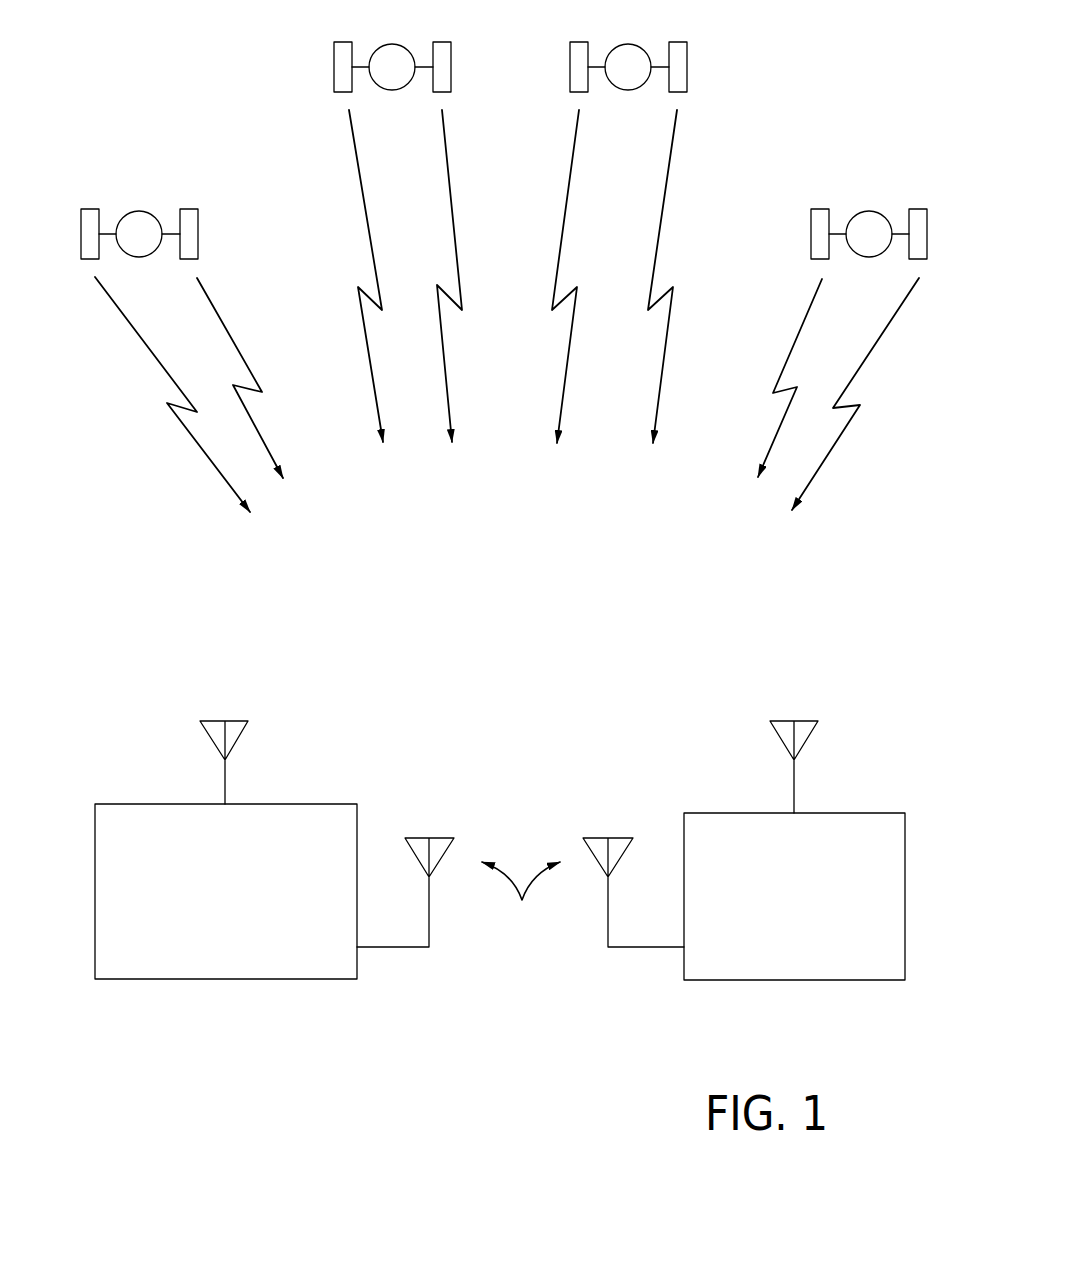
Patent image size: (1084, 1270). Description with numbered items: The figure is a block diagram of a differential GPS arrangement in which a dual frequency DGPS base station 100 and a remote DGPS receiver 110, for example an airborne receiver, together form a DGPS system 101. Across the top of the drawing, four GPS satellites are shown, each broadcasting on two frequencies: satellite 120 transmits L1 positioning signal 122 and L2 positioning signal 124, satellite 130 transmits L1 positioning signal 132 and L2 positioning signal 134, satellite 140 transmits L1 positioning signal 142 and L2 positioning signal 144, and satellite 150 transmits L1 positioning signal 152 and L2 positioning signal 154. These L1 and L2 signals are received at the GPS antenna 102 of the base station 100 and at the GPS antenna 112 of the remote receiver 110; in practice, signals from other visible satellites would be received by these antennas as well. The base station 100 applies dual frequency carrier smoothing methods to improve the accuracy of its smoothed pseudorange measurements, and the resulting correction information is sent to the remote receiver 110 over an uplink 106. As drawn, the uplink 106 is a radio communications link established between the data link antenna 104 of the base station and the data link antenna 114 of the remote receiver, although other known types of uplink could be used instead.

The dual frequency DGPS base station 100 is at (116, 804).
The DGPS system 101 is at (489, 763).
The antenna 102 is at (226, 779).
The antenna 104 is at (403, 948).
The uplink 106 is at (521, 895).
The remote DGPS receiver 110 is at (886, 813).
The antenna 112 is at (793, 787).
The antenna 114 is at (630, 948).
The satellite 120 is at (138, 211).
The L1 positioning signal 122 is at (112, 299).
The L2 positioning signal 124 is at (204, 290).
The satellite 130 is at (392, 44).
The L1 positioning signal 132 is at (355, 148).
The L2 positioning signal 134 is at (446, 152).
The satellite 140 is at (628, 44).
The L1 positioning signal 142 is at (566, 374).
The L2 positioning signal 144 is at (669, 165).
The satellite 150 is at (869, 211).
The L1 positioning signal 152 is at (805, 318).
The L2 positioning signal 154 is at (878, 340).